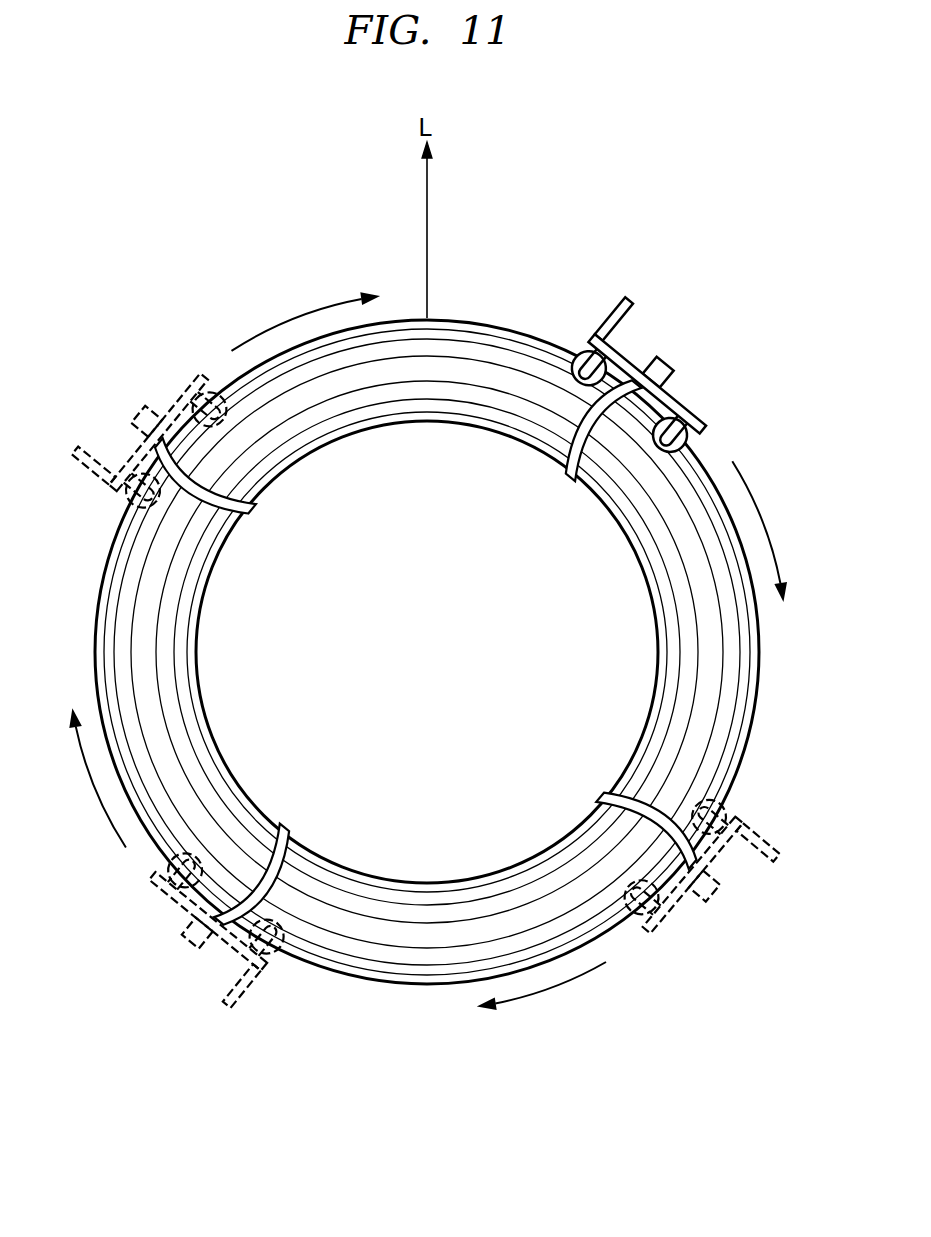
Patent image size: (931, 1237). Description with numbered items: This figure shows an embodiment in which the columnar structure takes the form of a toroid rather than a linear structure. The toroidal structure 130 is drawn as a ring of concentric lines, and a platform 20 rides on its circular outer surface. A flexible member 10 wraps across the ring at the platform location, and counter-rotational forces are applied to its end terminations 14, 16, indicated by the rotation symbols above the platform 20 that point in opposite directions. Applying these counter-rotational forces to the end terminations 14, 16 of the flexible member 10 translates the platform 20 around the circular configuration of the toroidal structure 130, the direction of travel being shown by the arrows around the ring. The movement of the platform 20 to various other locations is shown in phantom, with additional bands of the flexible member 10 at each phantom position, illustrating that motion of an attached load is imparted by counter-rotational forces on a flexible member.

The flexible member 10 is at (233, 508).
The end termination 14 is at (622, 380).
The end termination 16 is at (525, 173).
The platform 20 is at (625, 287).
The toroidal structure 130 is at (469, 343).